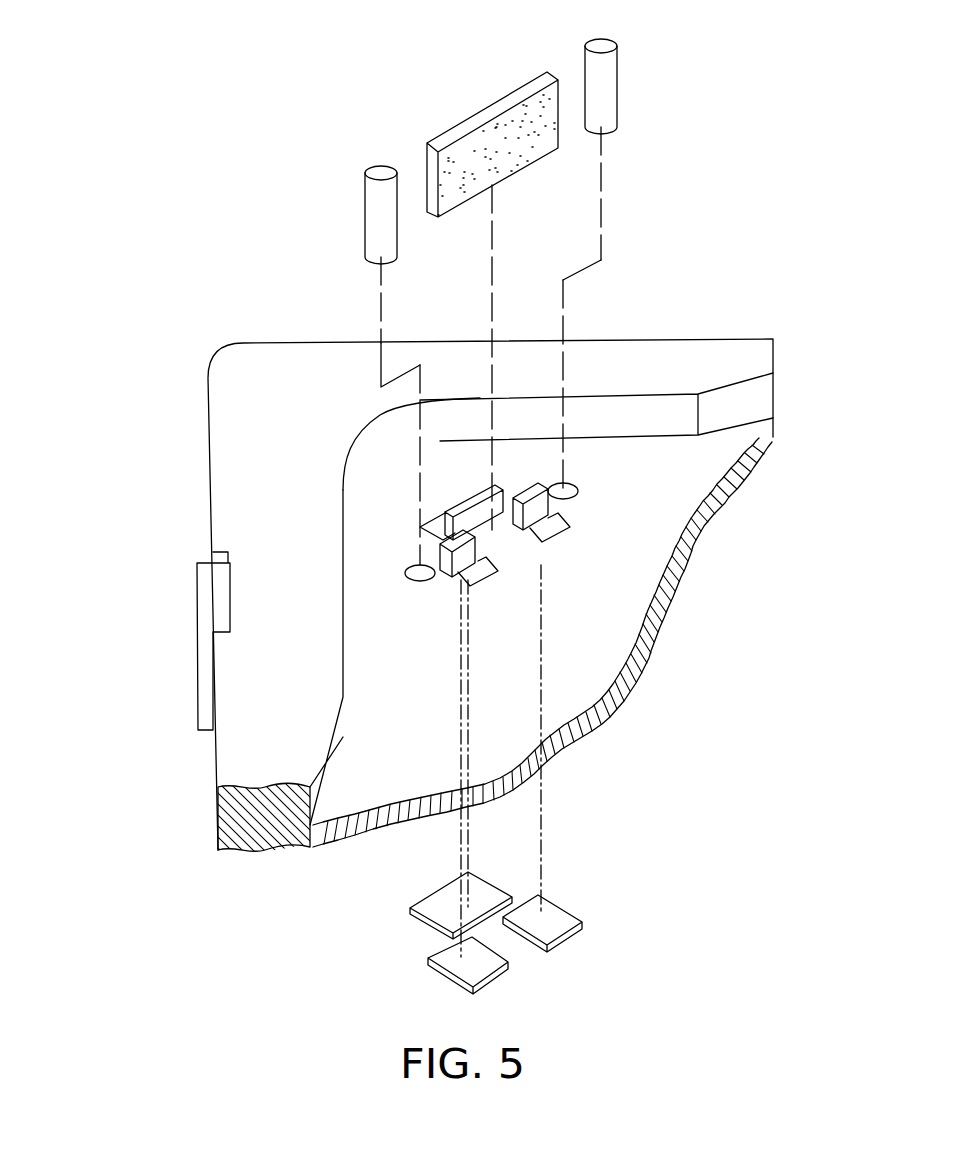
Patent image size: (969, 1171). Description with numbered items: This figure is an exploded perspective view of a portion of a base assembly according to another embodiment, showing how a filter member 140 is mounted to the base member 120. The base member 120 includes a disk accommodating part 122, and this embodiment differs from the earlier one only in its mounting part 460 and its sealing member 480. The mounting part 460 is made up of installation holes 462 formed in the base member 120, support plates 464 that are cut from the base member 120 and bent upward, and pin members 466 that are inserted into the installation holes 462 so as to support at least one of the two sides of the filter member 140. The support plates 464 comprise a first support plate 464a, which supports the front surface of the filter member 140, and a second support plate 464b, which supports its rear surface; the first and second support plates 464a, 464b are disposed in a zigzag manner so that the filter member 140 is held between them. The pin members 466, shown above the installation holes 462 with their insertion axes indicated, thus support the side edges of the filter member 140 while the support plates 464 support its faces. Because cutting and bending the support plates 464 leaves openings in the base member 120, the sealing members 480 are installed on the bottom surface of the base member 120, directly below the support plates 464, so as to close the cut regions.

The base member 120 is at (227, 510).
The disk accommodating part 122 is at (640, 460).
The filter member 140 is at (480, 115).
The mounting part 460 is at (308, 72).
The installation holes 462 is at (415, 568).
The support plates 464 is at (310, 268).
The first support plate 464a is at (530, 490).
The second support plate 464b is at (467, 500).
The pin members 466 is at (382, 170).
The sealing member 480 is at (433, 903).